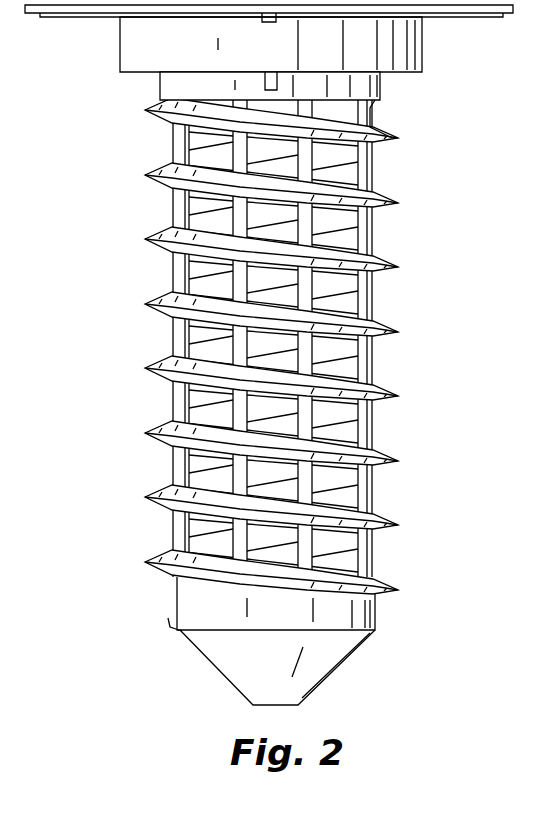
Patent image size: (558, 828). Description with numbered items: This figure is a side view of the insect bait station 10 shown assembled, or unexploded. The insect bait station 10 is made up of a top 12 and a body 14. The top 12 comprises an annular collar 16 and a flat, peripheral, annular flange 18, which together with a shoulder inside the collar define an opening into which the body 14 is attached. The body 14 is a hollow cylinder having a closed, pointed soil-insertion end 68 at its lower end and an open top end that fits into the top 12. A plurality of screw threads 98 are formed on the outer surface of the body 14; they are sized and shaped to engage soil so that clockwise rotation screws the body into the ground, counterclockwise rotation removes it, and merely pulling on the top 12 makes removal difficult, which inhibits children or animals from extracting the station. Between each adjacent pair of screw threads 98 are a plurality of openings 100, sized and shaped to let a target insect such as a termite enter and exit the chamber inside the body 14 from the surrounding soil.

The insect bait station 10 is at (80, 174).
The top 12 is at (463, 35).
The body 14 is at (386, 310).
The annular collar 16 is at (422, 71).
The flange 18 is at (88, 19).
The soil-insertion end 68 is at (356, 690).
The screw threads 98 is at (399, 134).
The openings 100 is at (348, 242).